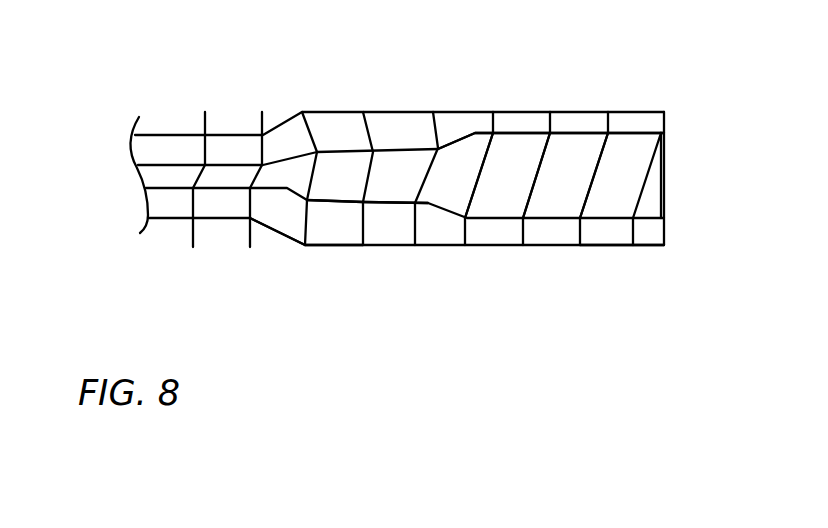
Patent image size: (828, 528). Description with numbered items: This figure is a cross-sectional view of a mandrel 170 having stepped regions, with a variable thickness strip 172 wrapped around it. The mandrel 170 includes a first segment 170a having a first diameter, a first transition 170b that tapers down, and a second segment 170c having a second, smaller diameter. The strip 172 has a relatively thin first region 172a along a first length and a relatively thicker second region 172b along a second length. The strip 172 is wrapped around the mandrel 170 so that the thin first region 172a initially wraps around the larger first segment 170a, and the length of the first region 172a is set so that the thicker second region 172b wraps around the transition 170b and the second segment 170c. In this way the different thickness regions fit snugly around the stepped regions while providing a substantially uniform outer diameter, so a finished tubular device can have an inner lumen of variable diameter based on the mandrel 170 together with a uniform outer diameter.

The mandrel 170 is at (446, 228).
The first segment 170a is at (548, 218).
The first transition 170b is at (455, 137).
The second segment 170c is at (383, 203).
The strip 172 is at (410, 110).
The first region 172a is at (616, 232).
The second region 172b is at (330, 230).